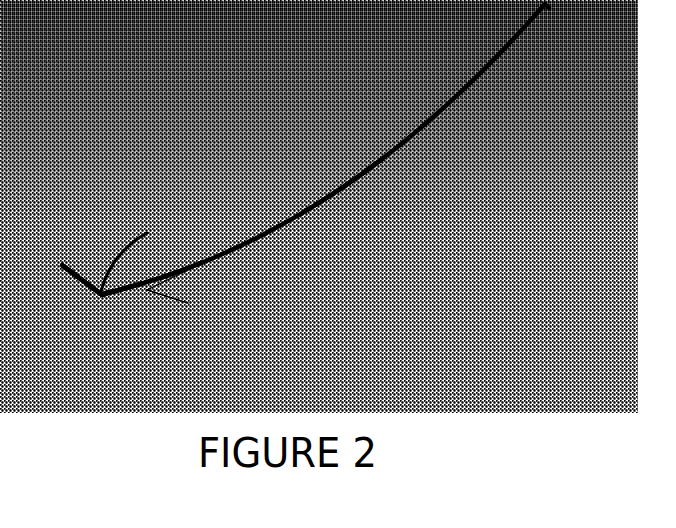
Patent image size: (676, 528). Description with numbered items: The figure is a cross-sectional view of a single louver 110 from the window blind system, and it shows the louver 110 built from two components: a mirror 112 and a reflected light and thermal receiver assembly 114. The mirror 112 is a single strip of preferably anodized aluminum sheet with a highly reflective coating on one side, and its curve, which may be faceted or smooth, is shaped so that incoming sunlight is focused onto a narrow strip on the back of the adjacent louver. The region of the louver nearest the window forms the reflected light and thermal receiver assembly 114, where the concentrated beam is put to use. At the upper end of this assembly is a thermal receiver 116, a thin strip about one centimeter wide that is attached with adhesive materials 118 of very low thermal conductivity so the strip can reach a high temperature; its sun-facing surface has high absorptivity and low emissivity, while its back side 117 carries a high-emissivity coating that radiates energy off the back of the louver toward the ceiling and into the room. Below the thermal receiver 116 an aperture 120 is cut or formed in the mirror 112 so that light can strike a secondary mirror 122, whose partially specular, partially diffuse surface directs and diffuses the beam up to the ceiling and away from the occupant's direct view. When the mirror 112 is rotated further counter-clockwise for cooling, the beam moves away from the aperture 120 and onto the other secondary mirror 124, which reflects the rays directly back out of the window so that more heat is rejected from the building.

The louver 110 is at (426, 141).
The mirror 112 is at (353, 182).
The reflected light and thermal receiver assembly 114 is at (123, 219).
The thermal receiver 116 is at (171, 300).
The back side 117 is at (176, 300).
The adhesive materials 118 is at (187, 269).
The aperture 120 is at (127, 298).
The secondary mirror 122 is at (128, 248).
The other secondary mirror 124 is at (72, 285).